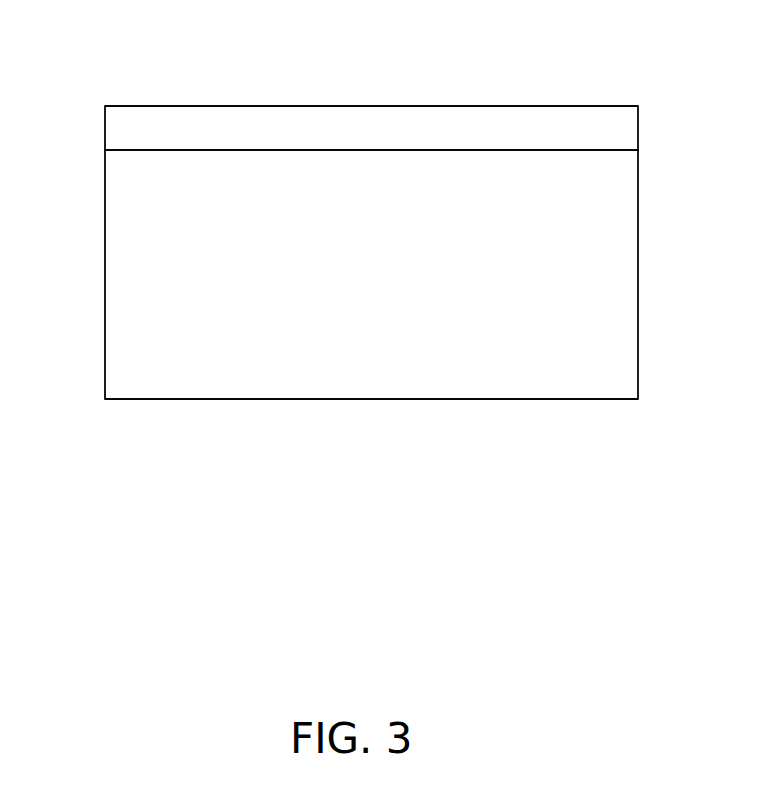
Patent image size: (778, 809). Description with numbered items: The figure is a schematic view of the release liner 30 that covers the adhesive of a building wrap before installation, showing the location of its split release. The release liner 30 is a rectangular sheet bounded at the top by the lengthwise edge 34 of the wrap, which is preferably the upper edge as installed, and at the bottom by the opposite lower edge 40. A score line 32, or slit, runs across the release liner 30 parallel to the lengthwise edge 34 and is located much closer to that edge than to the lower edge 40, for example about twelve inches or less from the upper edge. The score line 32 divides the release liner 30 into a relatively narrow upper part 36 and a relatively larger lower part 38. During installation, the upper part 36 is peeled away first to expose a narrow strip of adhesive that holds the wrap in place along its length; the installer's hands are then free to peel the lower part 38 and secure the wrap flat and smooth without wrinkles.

The release liner 30 is at (170, 368).
The score line 32 is at (208, 150).
The lengthwise edge 34 is at (560, 106).
The upper part 36 is at (363, 128).
The lower part 38 is at (343, 328).
The lower edge 40 is at (570, 399).